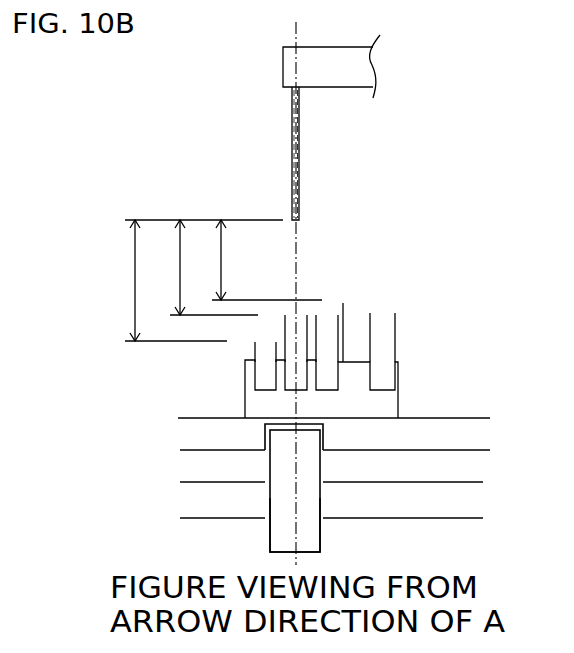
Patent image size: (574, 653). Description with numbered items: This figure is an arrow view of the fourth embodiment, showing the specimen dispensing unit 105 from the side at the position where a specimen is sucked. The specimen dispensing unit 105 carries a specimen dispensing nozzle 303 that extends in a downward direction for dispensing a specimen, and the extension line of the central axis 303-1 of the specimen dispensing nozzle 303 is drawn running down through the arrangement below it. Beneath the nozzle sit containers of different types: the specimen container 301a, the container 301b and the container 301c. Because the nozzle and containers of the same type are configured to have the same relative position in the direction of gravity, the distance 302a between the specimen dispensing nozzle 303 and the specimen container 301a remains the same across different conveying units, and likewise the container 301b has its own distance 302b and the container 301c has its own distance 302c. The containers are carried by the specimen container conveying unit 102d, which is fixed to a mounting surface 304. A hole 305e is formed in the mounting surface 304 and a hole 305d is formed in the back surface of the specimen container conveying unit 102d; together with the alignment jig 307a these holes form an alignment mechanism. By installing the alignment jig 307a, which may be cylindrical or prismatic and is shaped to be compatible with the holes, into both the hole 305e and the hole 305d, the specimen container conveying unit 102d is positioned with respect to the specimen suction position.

The specimen dispensing unit 105 is at (356, 73).
The specimen dispensing nozzle 303 is at (290, 182).
The central axis 303-1 is at (300, 158).
The distance 302a is at (127, 268).
The distance 302b is at (177, 270).
The distance 302c is at (220, 268).
The specimen container 301a is at (268, 348).
The container 301b is at (290, 369).
The container 301c is at (358, 313).
The specimen container conveying unit 102d is at (453, 437).
The mounting surface 304 is at (430, 500).
The hole 305d is at (265, 438).
The alignment jig 307a is at (280, 470).
The hole 305e is at (265, 498).